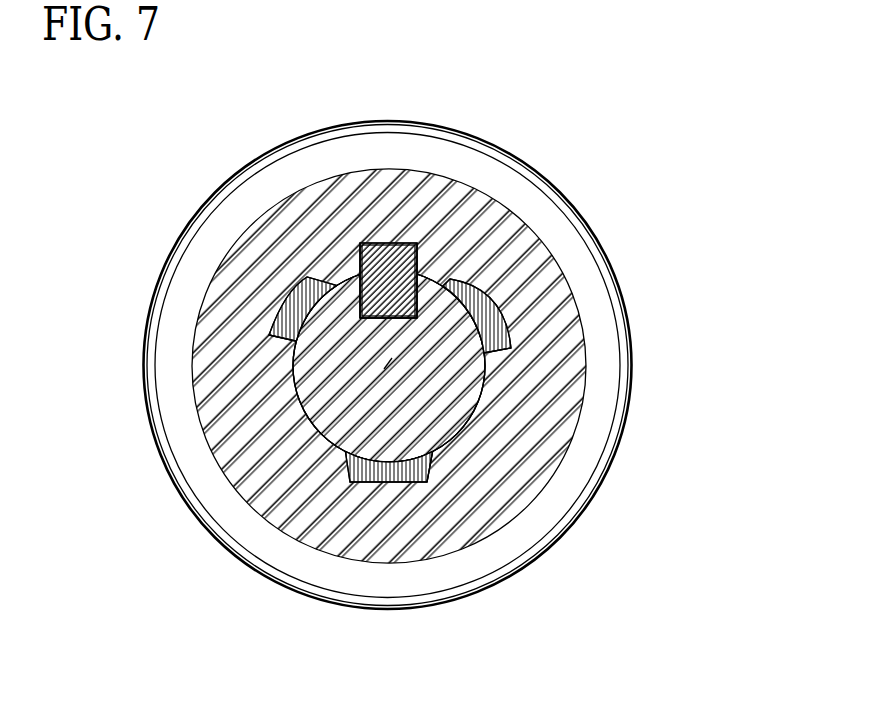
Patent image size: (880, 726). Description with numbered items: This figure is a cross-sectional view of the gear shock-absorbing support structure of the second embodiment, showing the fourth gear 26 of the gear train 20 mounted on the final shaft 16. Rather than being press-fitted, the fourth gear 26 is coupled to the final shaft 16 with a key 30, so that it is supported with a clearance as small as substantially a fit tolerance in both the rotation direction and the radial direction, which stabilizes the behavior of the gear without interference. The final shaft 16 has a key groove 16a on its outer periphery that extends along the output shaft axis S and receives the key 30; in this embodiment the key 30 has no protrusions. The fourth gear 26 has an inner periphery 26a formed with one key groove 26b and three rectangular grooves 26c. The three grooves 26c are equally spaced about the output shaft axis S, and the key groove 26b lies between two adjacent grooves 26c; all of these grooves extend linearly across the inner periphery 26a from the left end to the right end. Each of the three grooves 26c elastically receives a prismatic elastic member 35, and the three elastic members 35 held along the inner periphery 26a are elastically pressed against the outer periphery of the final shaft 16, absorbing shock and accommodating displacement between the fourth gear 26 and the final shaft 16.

The gear train 20 is at (190, 178).
The fourth gear 26 is at (589, 232).
The inner periphery 26a is at (337, 412).
The key groove 26b is at (436, 252).
The rectangular grooves 26c is at (272, 347).
The key 30 is at (372, 243).
The elastic members 35 is at (358, 282).
The final shaft 16 is at (450, 367).
The key groove 16a is at (357, 302).
The output shaft axis S is at (387, 363).